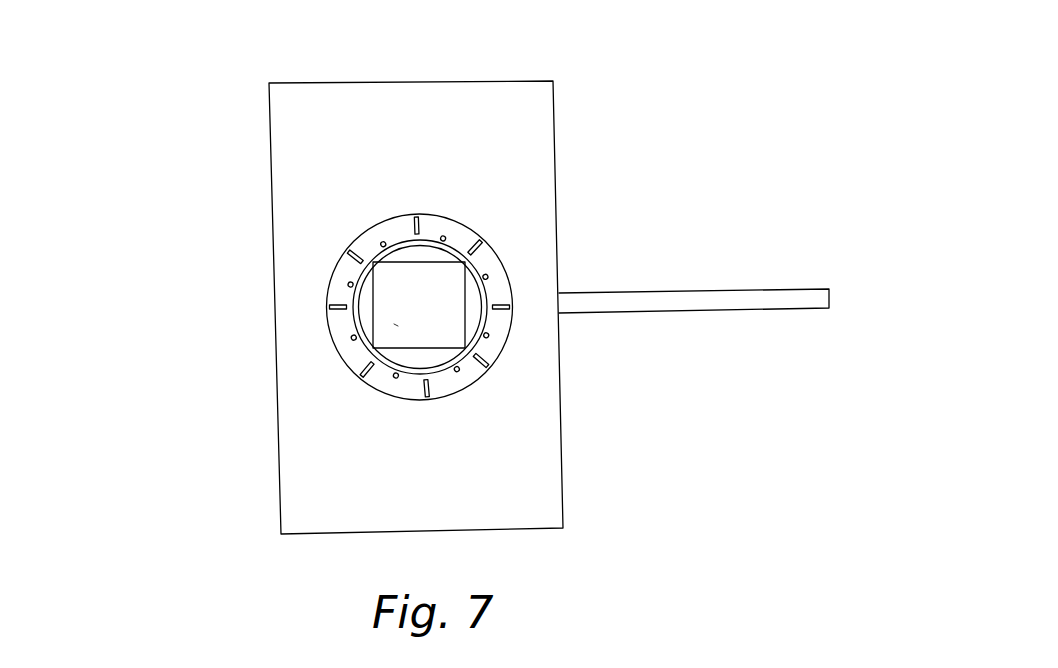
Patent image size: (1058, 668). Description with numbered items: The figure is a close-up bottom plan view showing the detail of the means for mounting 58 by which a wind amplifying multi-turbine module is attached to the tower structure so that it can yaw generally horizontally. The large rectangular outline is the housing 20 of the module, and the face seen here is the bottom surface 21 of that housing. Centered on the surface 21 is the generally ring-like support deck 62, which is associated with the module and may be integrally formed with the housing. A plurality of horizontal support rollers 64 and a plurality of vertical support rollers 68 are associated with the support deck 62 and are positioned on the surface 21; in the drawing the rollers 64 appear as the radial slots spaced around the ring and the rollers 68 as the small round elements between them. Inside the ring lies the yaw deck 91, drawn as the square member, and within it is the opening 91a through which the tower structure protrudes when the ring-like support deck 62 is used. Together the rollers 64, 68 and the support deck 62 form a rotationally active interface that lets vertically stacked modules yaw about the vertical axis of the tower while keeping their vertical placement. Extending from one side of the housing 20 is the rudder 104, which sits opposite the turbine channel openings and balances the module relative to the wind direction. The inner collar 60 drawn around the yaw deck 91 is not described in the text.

The means for mounting 58 is at (580, 121).
The surface 21 is at (334, 135).
The housing 20 is at (303, 437).
The support deck 62 is at (387, 236).
The inner collar 60 is at (478, 267).
The yaw deck 91 is at (372, 310).
The opening 91a is at (396, 325).
The horizontal support rollers 64 is at (360, 368).
The vertical support rollers 68 is at (458, 370).
The rudder 104 is at (720, 290).